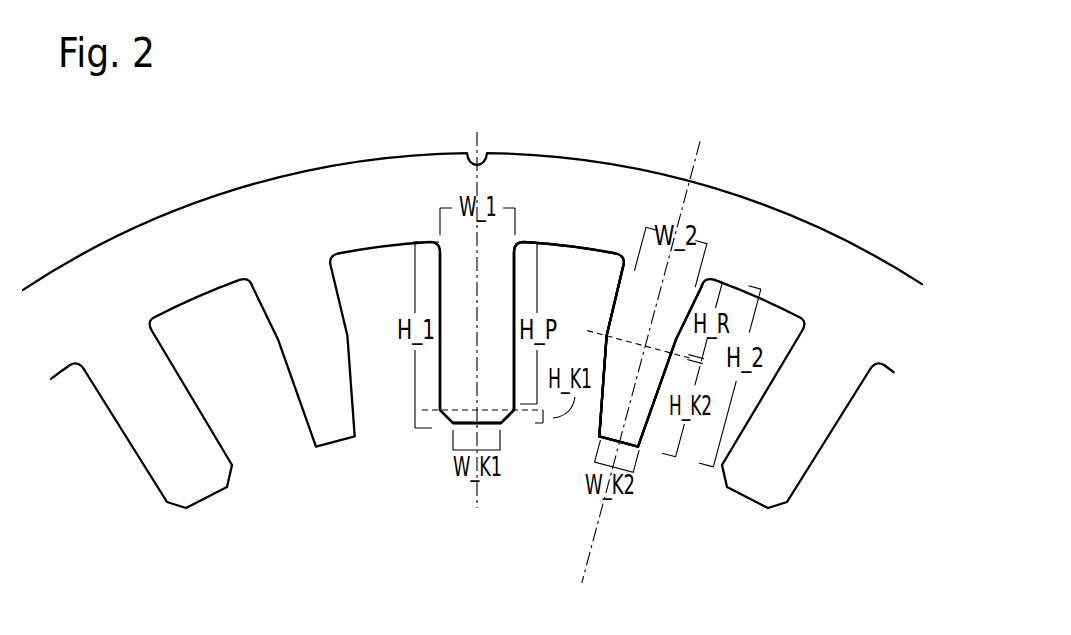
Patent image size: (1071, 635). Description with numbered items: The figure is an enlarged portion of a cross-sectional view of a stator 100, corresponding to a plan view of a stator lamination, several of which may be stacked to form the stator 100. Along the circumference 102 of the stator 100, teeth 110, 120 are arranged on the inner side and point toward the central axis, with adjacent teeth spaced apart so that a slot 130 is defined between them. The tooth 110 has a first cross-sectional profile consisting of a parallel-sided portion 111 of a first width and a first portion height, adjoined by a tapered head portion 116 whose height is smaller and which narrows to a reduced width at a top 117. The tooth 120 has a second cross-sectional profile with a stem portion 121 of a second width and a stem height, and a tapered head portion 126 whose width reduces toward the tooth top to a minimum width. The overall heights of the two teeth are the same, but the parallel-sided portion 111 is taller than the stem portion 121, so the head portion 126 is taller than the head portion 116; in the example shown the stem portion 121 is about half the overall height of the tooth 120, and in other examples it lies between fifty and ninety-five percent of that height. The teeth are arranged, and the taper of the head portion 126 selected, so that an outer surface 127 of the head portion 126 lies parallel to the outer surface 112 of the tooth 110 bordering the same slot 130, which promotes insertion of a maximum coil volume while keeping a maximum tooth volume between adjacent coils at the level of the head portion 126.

The stator 100 is at (128, 229).
The circumference 102 is at (243, 246).
The tooth having the first cross-sectional profile 110 is at (458, 273).
The parallel-sided portion 111 is at (436, 289).
The outer surface 112 is at (517, 271).
The tapered head portion 116 is at (444, 419).
The top of head portion 117 is at (467, 427).
The tooth having the second cross-sectional profile 120 is at (638, 280).
The stem portion 121 is at (681, 283).
The tapered head portion 126 is at (646, 416).
The outer surface 127 is at (596, 428).
The slot 130 is at (573, 260).